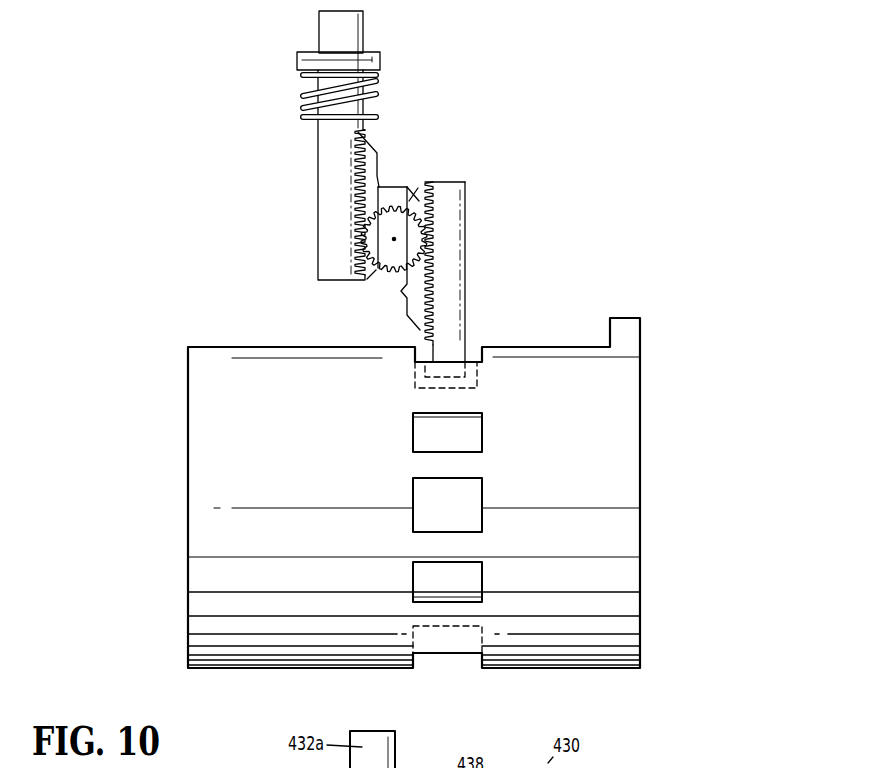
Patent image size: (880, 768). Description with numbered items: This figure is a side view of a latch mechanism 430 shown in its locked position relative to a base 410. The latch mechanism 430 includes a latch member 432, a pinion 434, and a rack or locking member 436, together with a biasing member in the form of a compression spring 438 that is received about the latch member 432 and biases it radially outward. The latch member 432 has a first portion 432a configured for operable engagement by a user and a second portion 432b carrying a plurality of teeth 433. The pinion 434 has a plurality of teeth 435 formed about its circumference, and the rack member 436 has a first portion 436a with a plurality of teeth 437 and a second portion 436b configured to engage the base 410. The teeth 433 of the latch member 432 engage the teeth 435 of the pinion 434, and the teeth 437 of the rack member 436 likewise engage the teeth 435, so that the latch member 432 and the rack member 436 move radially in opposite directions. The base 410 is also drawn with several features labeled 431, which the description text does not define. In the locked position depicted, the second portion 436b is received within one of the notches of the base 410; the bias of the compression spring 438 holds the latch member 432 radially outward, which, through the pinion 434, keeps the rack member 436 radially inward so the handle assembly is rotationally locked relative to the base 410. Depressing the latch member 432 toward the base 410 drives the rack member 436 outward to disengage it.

The base 410 is at (210, 569).
The latch mechanism 430 is at (521, 98).
The sensors 431 is at (478, 378).
The latch member 432 is at (309, 159).
The first portion 432a is at (350, 34).
The second portion 432b is at (330, 236).
The plurality of teeth 433 is at (380, 180).
The pinion 434 is at (441, 230).
The plurality of teeth 435 is at (397, 185).
The rack member 436 is at (474, 267).
The first portion 436a is at (462, 186).
The second portion 436b is at (447, 370).
The plurality of teeth 437 is at (382, 287).
The compression spring 438 is at (377, 97).